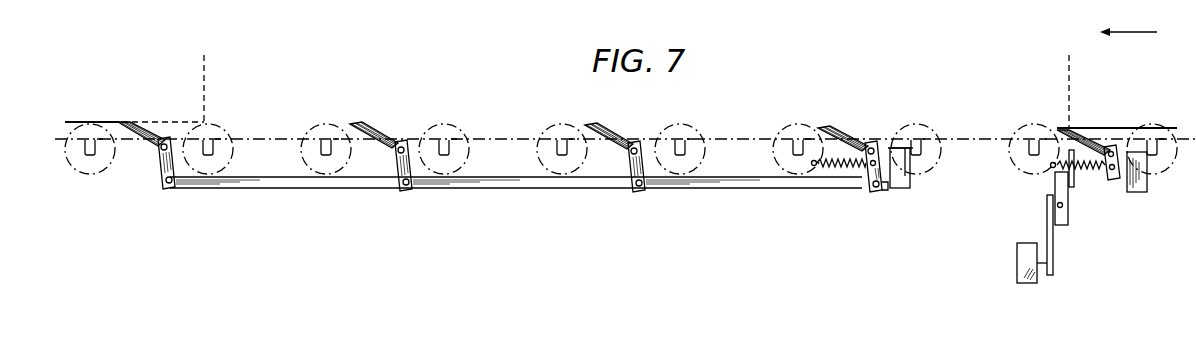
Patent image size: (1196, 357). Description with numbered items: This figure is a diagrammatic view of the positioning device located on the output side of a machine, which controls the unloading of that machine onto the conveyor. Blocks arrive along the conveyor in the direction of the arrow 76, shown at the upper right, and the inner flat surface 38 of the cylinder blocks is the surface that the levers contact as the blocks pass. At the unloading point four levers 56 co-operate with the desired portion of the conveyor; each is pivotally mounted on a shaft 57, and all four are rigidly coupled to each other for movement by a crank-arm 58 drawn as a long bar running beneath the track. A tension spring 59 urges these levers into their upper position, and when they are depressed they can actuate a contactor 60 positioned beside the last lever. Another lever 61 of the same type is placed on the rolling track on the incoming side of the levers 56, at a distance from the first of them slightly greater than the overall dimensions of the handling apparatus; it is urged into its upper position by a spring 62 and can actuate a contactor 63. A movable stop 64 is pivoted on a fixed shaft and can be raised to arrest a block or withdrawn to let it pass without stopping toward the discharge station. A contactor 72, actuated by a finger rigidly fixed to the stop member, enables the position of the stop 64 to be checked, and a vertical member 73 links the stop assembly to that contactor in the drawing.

The inner flat surface 38 is at (97, 117).
The levers 56 is at (146, 128).
The shafts 57 is at (159, 148).
The crank-arm 58 is at (545, 194).
The tension spring 59 is at (863, 186).
The contactor 60 is at (901, 183).
The lever 61 is at (1104, 134).
The spring 62 is at (1092, 172).
The contactor 63 is at (1131, 192).
The movable stop 64 is at (1055, 190).
The contactor 72 is at (1017, 263).
The actuating rod 73 is at (1053, 250).
The arrow 76 is at (1128, 22).